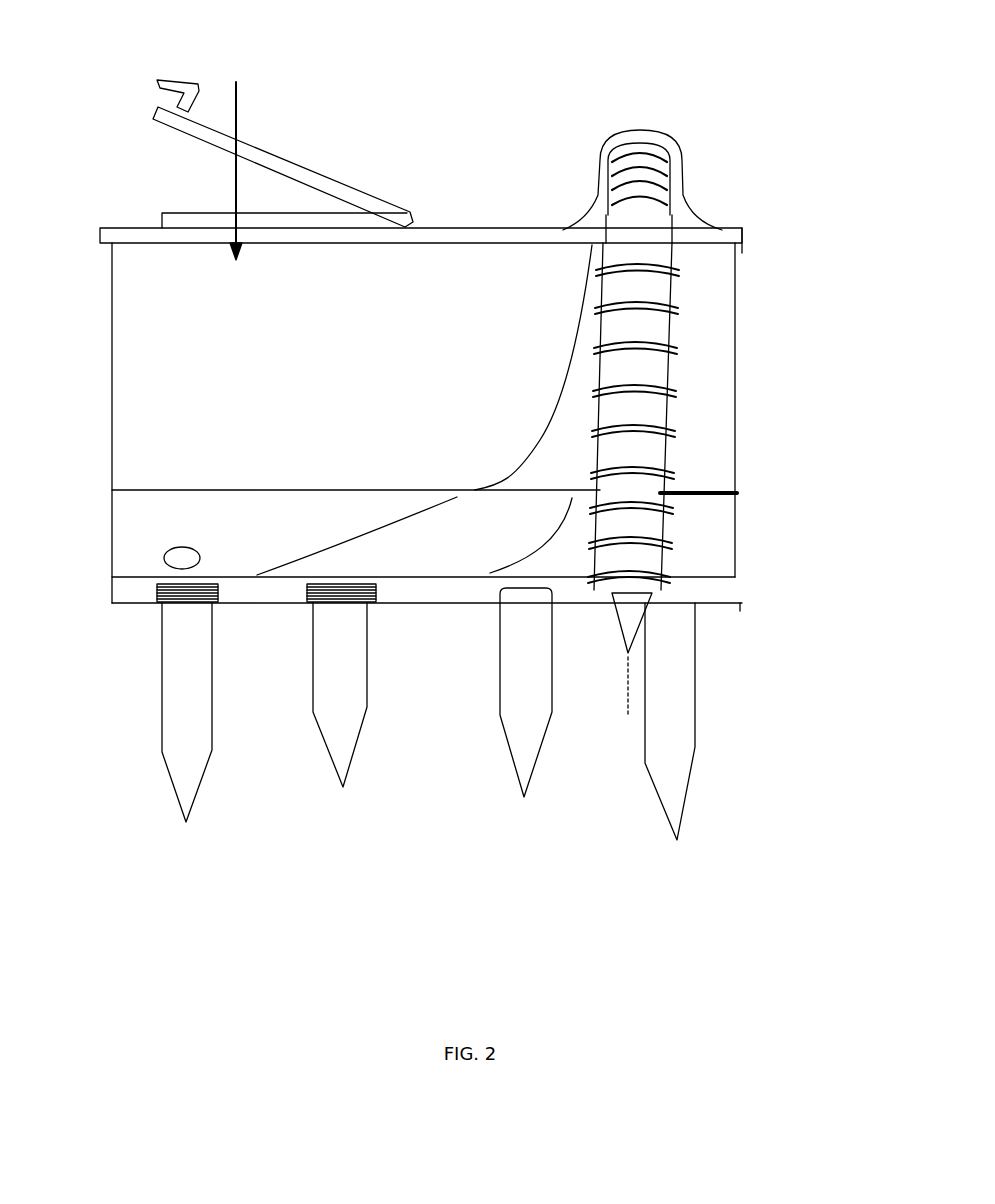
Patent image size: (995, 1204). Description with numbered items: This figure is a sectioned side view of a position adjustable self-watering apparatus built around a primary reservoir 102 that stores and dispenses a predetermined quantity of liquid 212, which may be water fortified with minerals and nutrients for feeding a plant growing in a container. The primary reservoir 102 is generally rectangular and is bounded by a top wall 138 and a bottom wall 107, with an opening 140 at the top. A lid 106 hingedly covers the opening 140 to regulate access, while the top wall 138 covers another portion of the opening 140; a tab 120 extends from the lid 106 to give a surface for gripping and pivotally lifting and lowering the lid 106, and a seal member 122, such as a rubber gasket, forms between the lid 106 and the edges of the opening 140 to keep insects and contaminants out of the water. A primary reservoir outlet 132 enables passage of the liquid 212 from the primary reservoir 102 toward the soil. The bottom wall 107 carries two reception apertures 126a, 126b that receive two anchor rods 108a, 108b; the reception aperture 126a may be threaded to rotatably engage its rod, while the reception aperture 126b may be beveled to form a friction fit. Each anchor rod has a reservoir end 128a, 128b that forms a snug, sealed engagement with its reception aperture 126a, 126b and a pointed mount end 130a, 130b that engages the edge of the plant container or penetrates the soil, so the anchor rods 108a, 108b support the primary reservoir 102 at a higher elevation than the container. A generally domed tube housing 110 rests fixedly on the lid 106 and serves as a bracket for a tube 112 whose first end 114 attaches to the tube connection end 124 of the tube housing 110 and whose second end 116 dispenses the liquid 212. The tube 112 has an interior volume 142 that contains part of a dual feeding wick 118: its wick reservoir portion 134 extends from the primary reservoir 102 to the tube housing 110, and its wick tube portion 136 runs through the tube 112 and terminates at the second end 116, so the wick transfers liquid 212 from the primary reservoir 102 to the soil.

The primary reservoir 102 is at (737, 354).
The lid 106 is at (298, 170).
The bottom wall 107 is at (592, 600).
The anchor rod 108a is at (165, 688).
The anchor rod 108b is at (313, 720).
The tube housing 110 is at (680, 152).
The tube 112 is at (683, 285).
The first end 114 is at (653, 171).
The second end 116 is at (631, 647).
The dual feeding wick 118 is at (449, 550).
The tab 120 is at (167, 83).
The seal member 122 is at (183, 208).
The tube connection end 124 is at (618, 147).
The reception aperture 126a is at (157, 598).
The reception aperture 126b is at (303, 612).
The reservoir end 128a is at (188, 599).
The reservoir end 128b is at (190, 406).
The mount end 130a is at (177, 813).
The mount end 130b is at (343, 790).
The primary reservoir outlet 132 is at (167, 550).
The wick reservoir portion 134 is at (388, 560).
The wick tube portion 136 is at (627, 260).
The top wall 138 is at (502, 230).
The opening 140 is at (233, 159).
The interior volume 142 is at (660, 232).
The liquid 212 is at (675, 500).